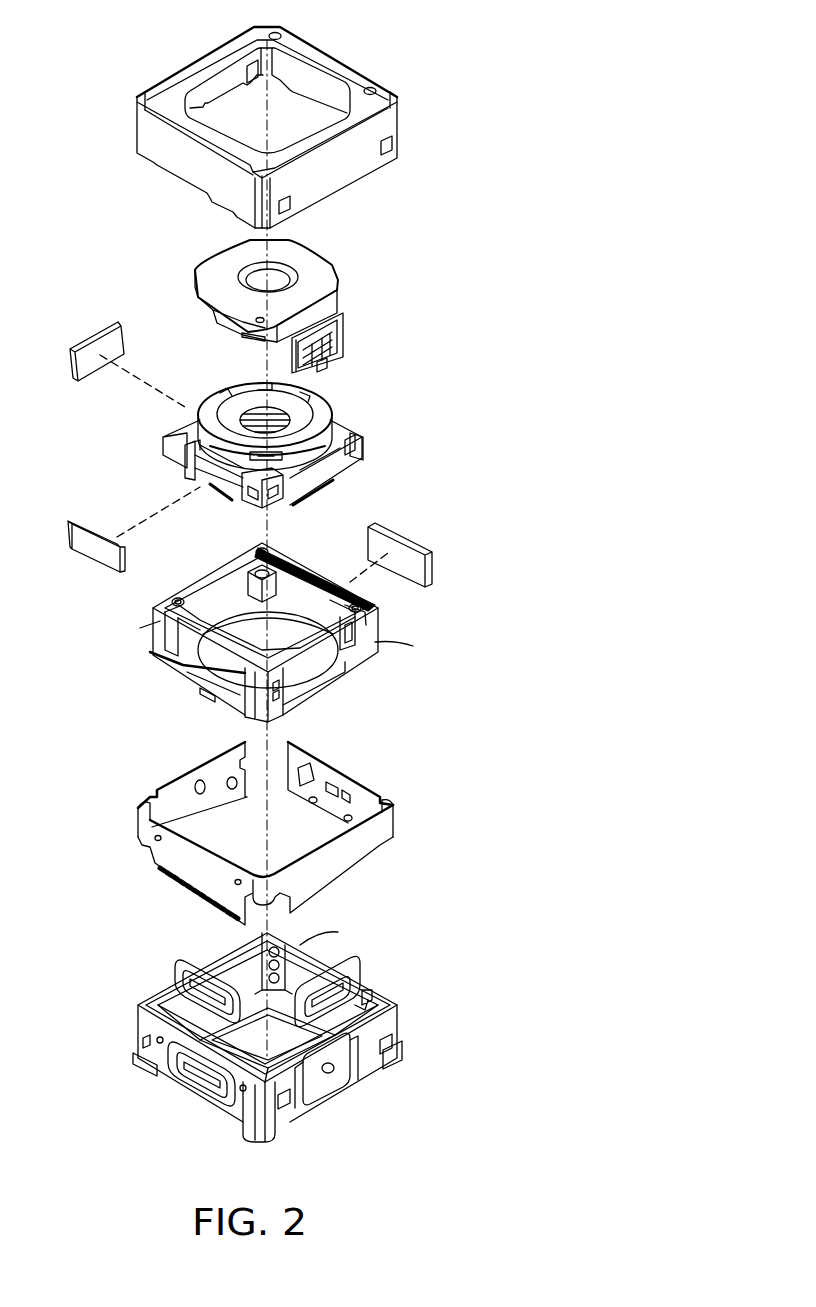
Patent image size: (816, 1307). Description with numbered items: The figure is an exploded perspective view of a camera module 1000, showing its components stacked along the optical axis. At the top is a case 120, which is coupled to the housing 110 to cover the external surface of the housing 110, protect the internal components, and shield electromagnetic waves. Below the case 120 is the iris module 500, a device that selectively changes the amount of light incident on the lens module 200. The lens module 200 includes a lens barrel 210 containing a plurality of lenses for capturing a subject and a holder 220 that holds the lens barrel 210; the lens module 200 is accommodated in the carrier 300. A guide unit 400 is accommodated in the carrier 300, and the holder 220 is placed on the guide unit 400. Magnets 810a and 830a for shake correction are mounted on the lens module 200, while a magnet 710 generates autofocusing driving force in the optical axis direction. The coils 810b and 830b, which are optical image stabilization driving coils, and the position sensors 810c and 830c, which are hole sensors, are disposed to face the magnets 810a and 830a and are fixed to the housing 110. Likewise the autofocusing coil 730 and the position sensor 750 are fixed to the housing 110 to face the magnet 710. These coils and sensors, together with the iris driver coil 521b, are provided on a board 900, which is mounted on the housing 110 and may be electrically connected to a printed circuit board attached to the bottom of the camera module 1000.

The camera module 1000 is at (120, 31).
The case 120 is at (387, 127).
The iris module 500 is at (352, 284).
The magnet 810a is at (95, 338).
The lens module 200 is at (336, 434).
The lens barrel 210 is at (307, 410).
The holder 220 is at (333, 422).
The magnet 830a is at (92, 550).
The magnet 710 is at (417, 567).
The carrier 300 is at (337, 678).
The guide unit 400 is at (165, 653).
The board 900 is at (367, 857).
The housing 110 is at (377, 1032).
The coil 810b is at (205, 990).
The position sensor 810c is at (205, 967).
The coil 730 is at (313, 977).
The position sensor 750 is at (320, 983).
The coil 830b is at (208, 1080).
The position sensor 830c is at (192, 1063).
The coil 521b is at (330, 1077).